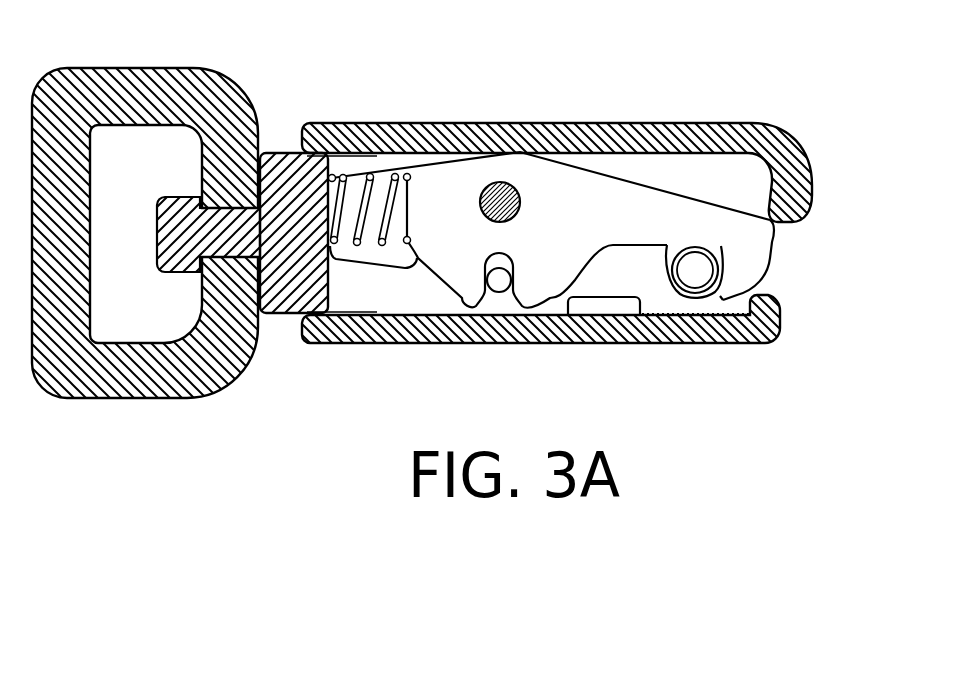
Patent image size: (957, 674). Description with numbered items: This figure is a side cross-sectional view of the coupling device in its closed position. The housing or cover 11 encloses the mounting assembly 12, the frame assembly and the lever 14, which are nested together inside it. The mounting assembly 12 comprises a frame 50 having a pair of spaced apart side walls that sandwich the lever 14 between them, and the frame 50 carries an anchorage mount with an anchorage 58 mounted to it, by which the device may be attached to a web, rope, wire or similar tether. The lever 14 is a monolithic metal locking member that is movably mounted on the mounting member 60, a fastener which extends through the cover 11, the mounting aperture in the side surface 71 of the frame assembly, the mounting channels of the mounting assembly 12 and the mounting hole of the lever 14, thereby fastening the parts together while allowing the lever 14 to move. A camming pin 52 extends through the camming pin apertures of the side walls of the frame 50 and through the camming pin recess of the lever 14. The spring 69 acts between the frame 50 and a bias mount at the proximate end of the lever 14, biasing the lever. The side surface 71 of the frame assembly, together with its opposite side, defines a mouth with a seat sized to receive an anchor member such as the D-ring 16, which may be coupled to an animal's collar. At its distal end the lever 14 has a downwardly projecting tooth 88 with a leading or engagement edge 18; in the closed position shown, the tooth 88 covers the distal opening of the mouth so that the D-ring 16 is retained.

The mounting assembly 12 is at (126, 440).
The anchorage 58 is at (115, 67).
The frame 50 is at (282, 153).
The spring 69 is at (366, 176).
The mounting member 60 is at (502, 182).
The lever 14 is at (632, 203).
The side surface 71 is at (692, 175).
The housing 11 is at (770, 145).
The engagement edge 18 is at (773, 260).
The camming pin 52 is at (500, 284).
The D-ring 16 is at (693, 278).
The tooth 88 is at (728, 292).